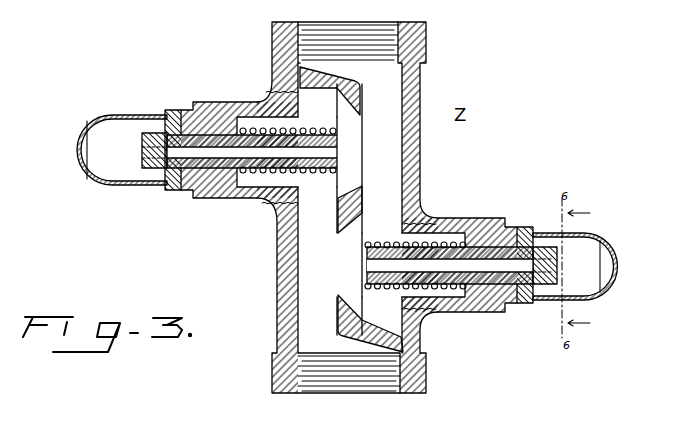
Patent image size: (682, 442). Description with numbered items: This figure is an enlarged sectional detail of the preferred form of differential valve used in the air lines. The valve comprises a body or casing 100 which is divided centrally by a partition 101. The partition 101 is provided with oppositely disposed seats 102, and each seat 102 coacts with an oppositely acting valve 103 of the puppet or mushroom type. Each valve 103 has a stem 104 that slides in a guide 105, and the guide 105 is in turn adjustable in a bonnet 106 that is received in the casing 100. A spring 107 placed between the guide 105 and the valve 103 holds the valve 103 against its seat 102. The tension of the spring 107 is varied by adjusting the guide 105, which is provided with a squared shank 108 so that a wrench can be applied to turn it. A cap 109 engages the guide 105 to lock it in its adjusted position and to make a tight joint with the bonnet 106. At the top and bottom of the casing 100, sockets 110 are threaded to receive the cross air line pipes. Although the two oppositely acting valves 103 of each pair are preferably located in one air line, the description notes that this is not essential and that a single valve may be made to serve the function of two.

The body or casing 100 is at (278, 286).
The partition 101 is at (347, 216).
The seat 102 is at (392, 190).
The valve 103 is at (346, 142).
The stem 104 is at (200, 152).
The guide 105 is at (213, 197).
The bonnet 106 is at (251, 192).
The spring 107 is at (252, 130).
The squared shank 108 is at (151, 168).
The cap 109 is at (117, 184).
The socket 110 is at (352, 42).